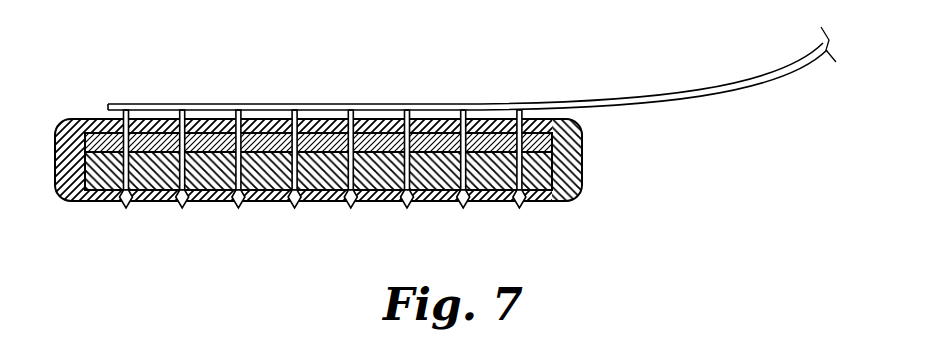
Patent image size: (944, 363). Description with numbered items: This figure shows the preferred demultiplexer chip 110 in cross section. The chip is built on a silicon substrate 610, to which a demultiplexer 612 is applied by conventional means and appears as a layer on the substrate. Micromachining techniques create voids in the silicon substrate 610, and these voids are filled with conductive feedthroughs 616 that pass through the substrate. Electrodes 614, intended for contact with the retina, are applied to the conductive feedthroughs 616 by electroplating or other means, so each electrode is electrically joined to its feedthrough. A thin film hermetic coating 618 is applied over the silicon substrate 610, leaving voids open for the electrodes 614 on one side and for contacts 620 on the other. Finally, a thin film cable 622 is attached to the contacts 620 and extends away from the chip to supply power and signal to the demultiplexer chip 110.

The demultiplexer chip 110 is at (445, 154).
The silicon substrate 610 is at (540, 178).
The demultiplexer 612 is at (554, 144).
The electrodes 614 is at (408, 209).
The conductive feedthroughs 616 is at (235, 170).
The thin film hermetic coating 618 is at (263, 200).
The contacts 620 is at (238, 118).
The thin film cable 622 is at (670, 100).